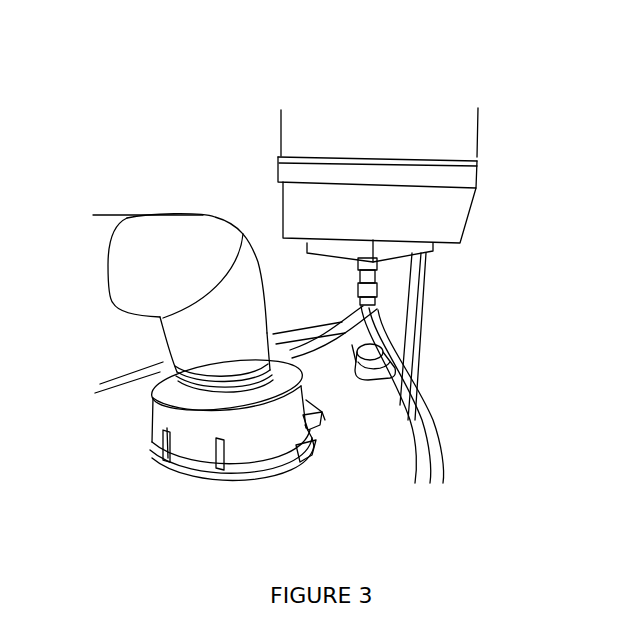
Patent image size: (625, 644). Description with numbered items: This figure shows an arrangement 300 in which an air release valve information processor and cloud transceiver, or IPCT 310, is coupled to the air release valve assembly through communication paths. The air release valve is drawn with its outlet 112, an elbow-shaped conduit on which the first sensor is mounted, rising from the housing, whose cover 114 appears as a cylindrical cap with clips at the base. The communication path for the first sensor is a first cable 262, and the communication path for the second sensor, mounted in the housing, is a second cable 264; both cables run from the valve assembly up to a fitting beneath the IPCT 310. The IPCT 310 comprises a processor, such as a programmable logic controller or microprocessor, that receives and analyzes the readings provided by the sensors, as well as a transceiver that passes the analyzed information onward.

The mounting assembly 300 is at (79, 52).
The air release valve information processor and cloud transceiver 310 is at (433, 141).
The outlet 112 is at (152, 287).
The cover 114 is at (358, 425).
The first cable 262 is at (342, 319).
The second cable 264 is at (432, 438).